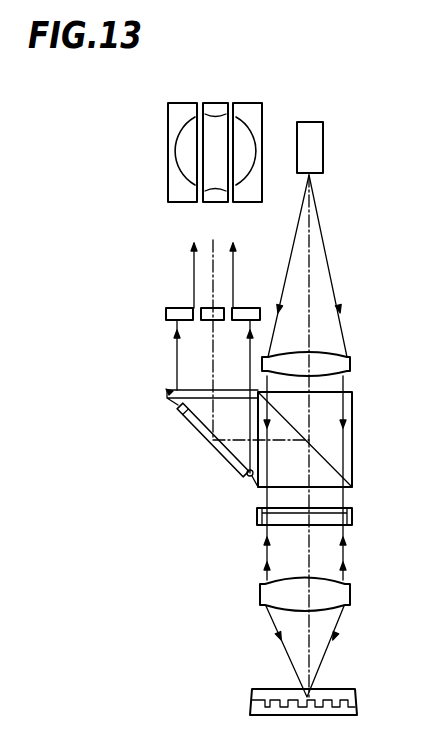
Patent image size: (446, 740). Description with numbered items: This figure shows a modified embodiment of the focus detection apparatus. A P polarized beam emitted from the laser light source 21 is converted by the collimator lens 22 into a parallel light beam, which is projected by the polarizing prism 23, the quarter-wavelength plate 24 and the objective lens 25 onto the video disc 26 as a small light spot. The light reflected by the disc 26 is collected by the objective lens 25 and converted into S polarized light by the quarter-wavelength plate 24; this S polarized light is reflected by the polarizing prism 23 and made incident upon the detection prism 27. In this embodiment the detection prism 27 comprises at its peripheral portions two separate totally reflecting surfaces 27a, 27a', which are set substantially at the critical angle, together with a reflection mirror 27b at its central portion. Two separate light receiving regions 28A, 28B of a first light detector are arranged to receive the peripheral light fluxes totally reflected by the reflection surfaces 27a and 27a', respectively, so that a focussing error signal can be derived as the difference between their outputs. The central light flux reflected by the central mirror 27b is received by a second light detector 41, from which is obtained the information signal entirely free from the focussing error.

The laser light source 21 is at (315, 141).
The collimator lens 22 is at (351, 365).
The polarizing prism 23 is at (352, 442).
The quarter-wavelength plate 24 is at (353, 508).
The objective lens 25 is at (351, 590).
The video disc 26 is at (333, 692).
The detection prism 27 is at (197, 390).
The totally reflecting surface 27a is at (208, 498).
The totally reflecting surface 27a' is at (125, 399).
The reflection mirror 27b is at (200, 437).
The light receiving region 28A is at (249, 308).
The light receiving region 28B is at (178, 308).
The second light detector 41 is at (206, 307).